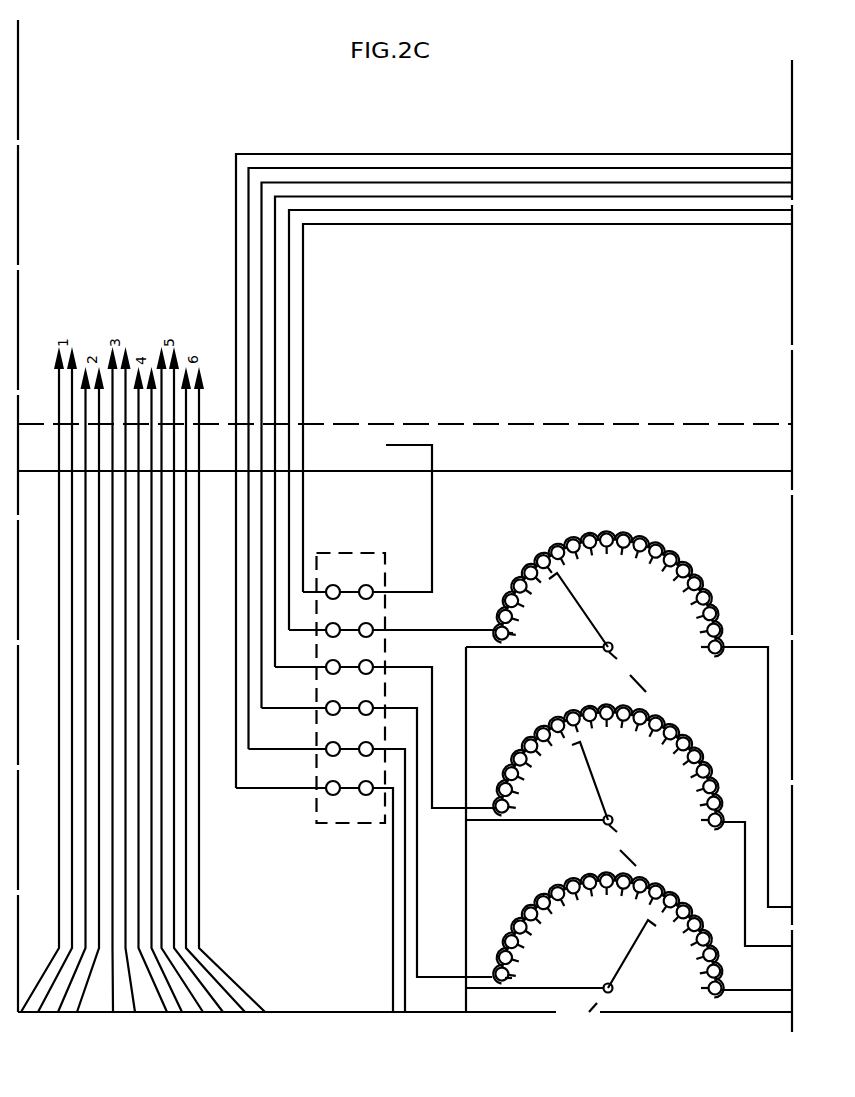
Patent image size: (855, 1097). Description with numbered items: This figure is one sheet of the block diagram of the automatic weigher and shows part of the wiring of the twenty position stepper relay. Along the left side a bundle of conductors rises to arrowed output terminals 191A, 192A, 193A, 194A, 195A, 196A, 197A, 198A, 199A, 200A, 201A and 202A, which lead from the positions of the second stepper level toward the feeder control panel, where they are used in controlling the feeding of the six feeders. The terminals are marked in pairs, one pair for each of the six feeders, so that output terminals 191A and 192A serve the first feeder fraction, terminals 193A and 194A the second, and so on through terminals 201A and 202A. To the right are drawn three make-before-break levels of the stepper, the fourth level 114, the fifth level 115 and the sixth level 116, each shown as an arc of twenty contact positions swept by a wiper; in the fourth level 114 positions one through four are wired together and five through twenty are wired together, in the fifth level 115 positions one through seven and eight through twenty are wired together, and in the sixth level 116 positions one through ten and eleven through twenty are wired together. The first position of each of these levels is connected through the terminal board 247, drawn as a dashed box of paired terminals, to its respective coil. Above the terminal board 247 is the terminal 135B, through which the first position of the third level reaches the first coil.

The fourth level 114 is at (706, 543).
The fifth level 115 is at (704, 728).
The sixth level 116 is at (692, 921).
The terminal 135B is at (413, 447).
The terminal board 247 is at (309, 814).
The output terminal 191A is at (42, 656).
The output terminal 192A is at (57, 656).
The terminal 193A is at (82, 534).
The terminal 194A is at (90, 658).
The terminal 195A is at (110, 652).
The terminal 196A is at (125, 652).
The terminal 197A is at (148, 596).
The terminal 198A is at (162, 658).
The terminal 199A is at (177, 651).
The terminal 200A is at (193, 651).
The terminal 201A is at (210, 658).
The terminal 202A is at (227, 658).